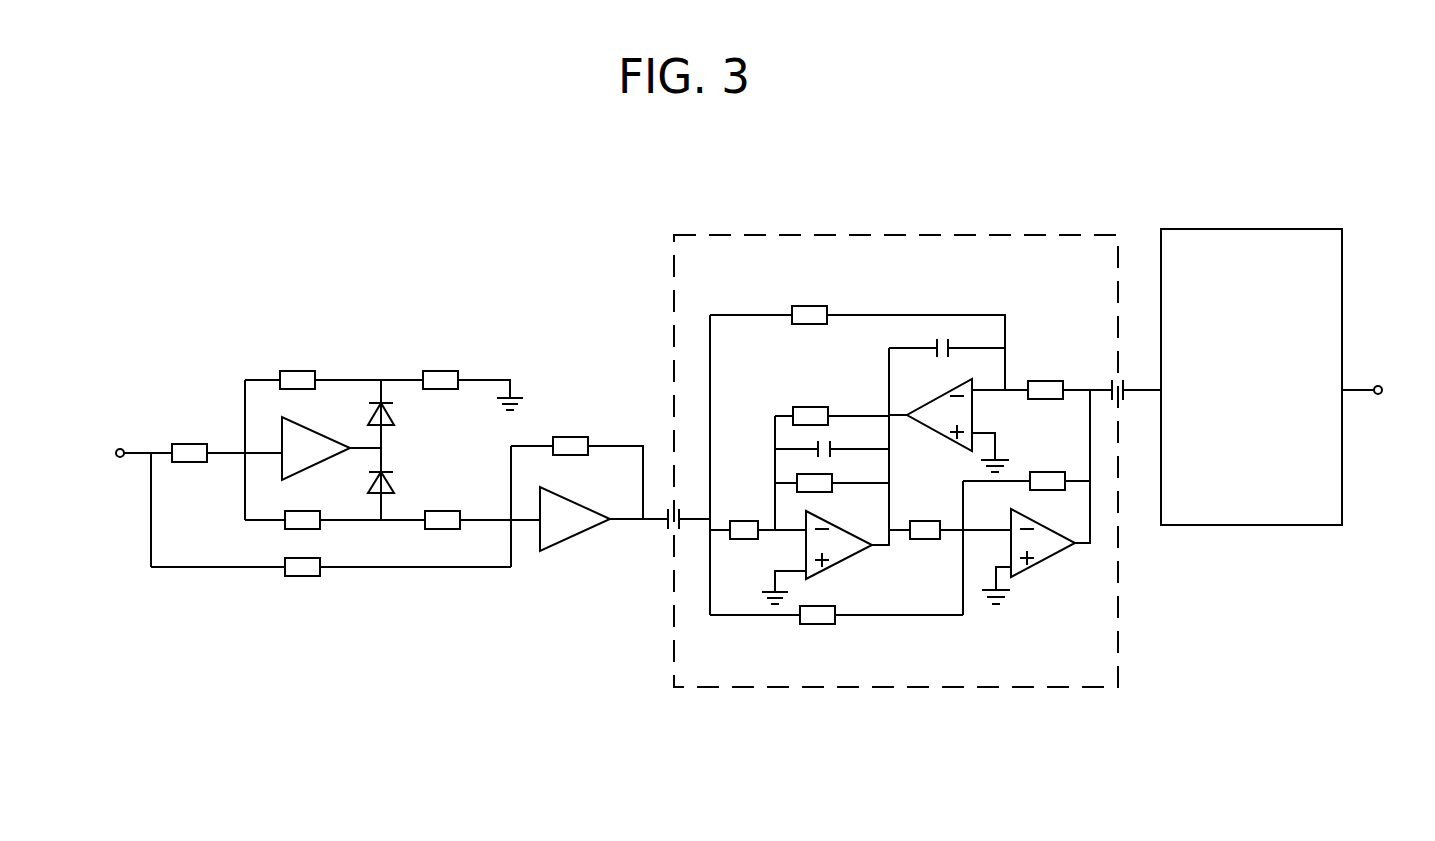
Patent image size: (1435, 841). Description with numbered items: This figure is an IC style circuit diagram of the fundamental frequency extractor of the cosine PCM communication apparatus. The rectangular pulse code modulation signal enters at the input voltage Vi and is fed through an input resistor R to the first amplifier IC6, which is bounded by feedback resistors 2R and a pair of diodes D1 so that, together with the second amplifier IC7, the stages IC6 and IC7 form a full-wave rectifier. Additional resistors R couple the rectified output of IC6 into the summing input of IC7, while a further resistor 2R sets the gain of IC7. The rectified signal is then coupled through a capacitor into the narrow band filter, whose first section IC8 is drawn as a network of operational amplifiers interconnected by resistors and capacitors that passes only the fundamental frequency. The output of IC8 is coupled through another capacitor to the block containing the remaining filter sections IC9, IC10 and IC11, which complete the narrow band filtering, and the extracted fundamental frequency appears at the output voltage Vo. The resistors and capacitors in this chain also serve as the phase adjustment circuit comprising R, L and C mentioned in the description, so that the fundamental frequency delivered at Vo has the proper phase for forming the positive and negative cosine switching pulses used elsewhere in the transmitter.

The input voltage Vi is at (134, 473).
The resistor R is at (317, 452).
The resistor 2R is at (435, 430).
The diode D1 is at (400, 442).
The full-wave rectifier amplifier IC6 is at (316, 437).
The full-wave rectifier amplifier IC7 is at (575, 504).
The narrow band filter stage IC8 is at (918, 461).
The narrow band filter stage IC9 is at (1251, 377).
The narrow band filter stage IC10 is at (1251, 377).
The narrow band filter stage IC11 is at (1251, 377).
The output voltage Vo is at (1384, 406).